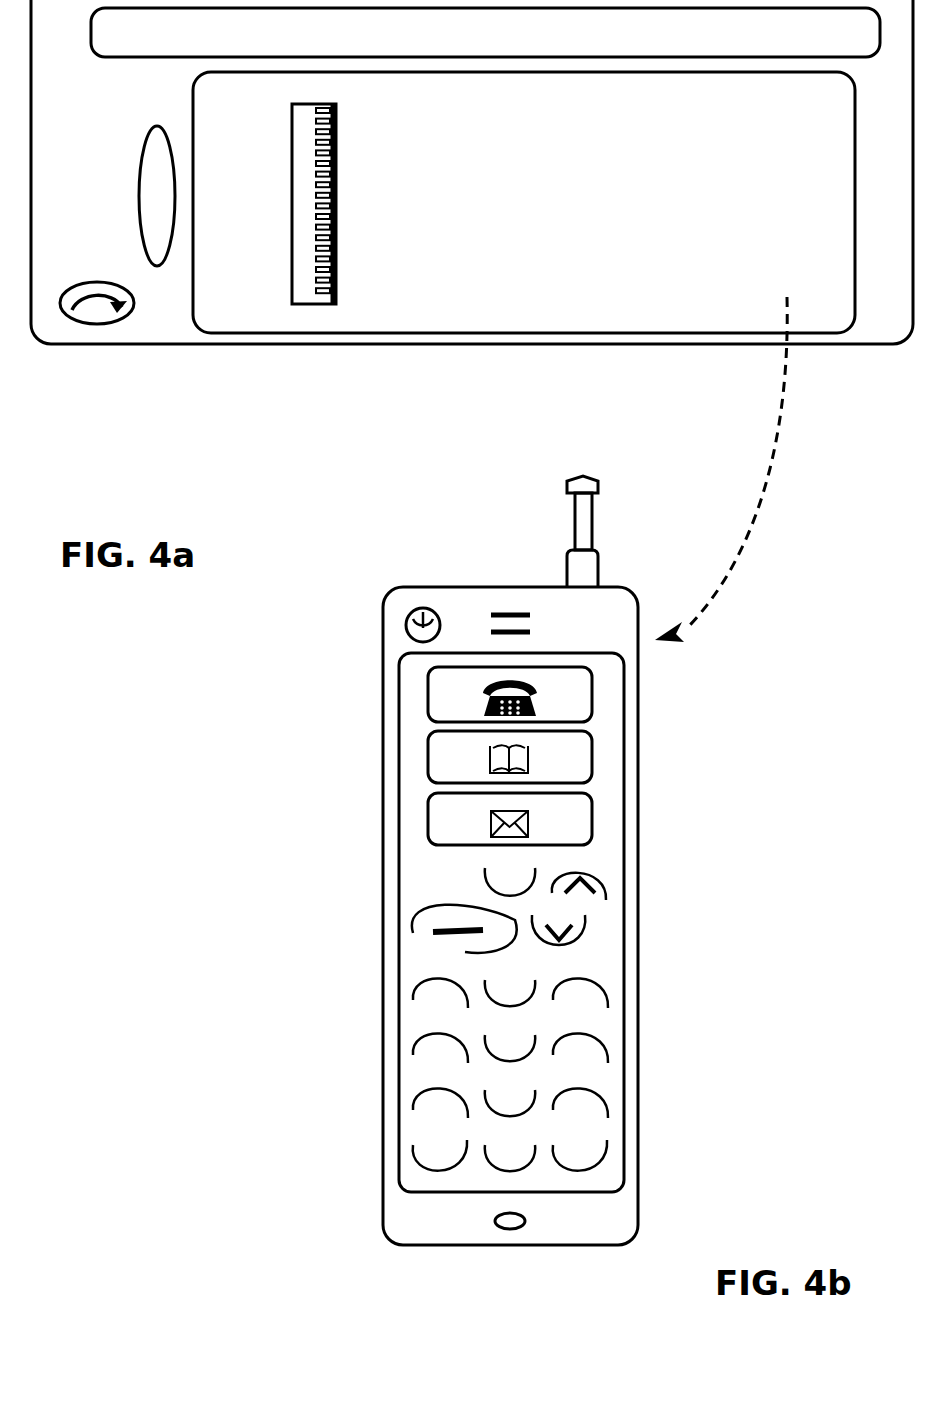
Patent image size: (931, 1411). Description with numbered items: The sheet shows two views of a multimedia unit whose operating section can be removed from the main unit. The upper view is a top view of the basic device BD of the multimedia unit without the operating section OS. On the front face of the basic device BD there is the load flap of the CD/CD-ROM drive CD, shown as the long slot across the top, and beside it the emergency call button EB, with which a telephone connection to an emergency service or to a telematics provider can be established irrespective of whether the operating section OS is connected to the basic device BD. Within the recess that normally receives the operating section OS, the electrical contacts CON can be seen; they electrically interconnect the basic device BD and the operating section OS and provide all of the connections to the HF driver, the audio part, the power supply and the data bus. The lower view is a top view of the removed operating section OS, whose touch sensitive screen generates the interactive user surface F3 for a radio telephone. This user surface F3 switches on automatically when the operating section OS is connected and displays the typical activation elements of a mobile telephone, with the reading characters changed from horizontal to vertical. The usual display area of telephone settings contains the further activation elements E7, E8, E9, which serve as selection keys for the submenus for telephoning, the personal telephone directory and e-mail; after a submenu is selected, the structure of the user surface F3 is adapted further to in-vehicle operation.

In FIG. 4a, the CD/CD-ROM drive CD is at (485, 32).
In FIG. 4a, the basic device BD is at (245, 290).
In FIG. 4a, the emergency call button EB is at (157, 258).
In FIG. 4a, the electrical contacts CON is at (309, 280).
In FIG. 4b, the operating section OS is at (393, 647).
In FIG. 4b, the activation element E7 is at (573, 695).
In FIG. 4b, the activation element E8 is at (572, 748).
In FIG. 4b, the activation element E9 is at (575, 820).
In FIG. 4b, the interactive user surface F3 is at (425, 868).